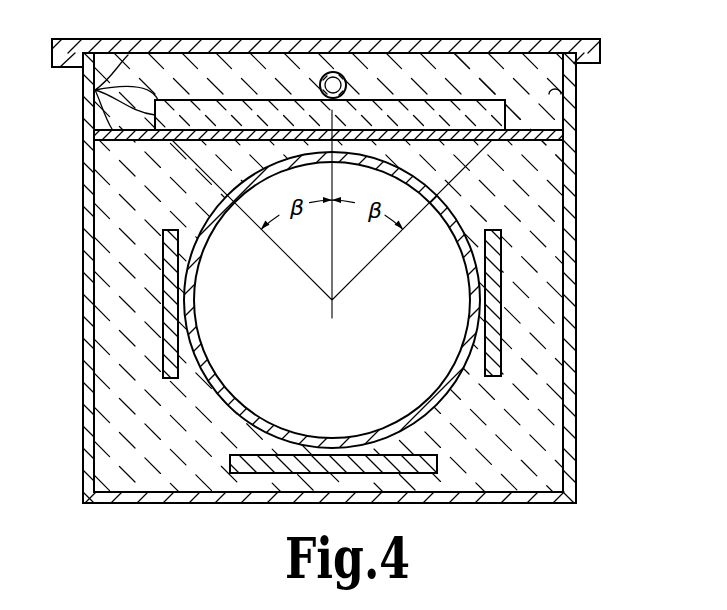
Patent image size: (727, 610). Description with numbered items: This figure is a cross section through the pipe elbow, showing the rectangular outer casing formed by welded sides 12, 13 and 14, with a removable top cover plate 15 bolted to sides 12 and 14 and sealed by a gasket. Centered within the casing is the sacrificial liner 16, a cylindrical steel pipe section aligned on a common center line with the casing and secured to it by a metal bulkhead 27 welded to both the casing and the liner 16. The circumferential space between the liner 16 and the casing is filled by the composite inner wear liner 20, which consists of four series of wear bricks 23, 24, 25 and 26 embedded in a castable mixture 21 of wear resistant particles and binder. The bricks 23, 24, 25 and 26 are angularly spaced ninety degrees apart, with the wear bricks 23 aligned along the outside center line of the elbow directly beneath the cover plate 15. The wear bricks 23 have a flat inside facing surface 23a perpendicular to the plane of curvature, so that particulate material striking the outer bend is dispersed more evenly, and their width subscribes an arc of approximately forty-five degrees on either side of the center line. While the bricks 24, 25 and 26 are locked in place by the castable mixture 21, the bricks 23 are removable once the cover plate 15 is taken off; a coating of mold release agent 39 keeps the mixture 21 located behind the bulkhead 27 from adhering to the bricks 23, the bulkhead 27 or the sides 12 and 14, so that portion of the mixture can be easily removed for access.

The side of outer casing 12 is at (569, 395).
The side of outer casing 13 is at (455, 497).
The side of outer casing 14 is at (90, 166).
The top cover plate 15 is at (449, 42).
The sacrificial liner 16 is at (470, 343).
The composite inner wear liner 20 is at (514, 441).
The castable mixture 21 is at (503, 58).
The wear bricks 23 is at (501, 117).
The inside facing surface 23a is at (276, 130).
The wear bricks 24 is at (497, 313).
The wear bricks 25 is at (262, 466).
The wear bricks 26 is at (165, 322).
The bulkhead 27 is at (125, 136).
The mold release agent 39 is at (95, 90).